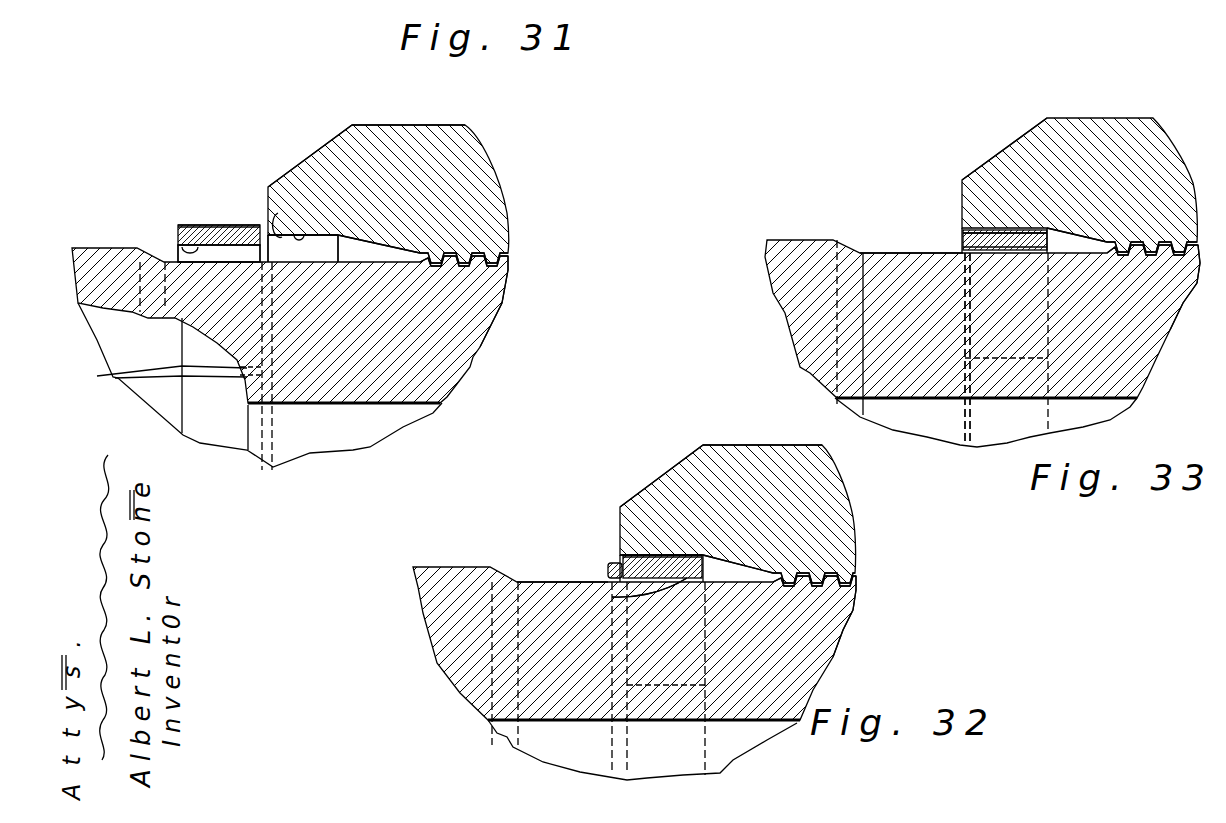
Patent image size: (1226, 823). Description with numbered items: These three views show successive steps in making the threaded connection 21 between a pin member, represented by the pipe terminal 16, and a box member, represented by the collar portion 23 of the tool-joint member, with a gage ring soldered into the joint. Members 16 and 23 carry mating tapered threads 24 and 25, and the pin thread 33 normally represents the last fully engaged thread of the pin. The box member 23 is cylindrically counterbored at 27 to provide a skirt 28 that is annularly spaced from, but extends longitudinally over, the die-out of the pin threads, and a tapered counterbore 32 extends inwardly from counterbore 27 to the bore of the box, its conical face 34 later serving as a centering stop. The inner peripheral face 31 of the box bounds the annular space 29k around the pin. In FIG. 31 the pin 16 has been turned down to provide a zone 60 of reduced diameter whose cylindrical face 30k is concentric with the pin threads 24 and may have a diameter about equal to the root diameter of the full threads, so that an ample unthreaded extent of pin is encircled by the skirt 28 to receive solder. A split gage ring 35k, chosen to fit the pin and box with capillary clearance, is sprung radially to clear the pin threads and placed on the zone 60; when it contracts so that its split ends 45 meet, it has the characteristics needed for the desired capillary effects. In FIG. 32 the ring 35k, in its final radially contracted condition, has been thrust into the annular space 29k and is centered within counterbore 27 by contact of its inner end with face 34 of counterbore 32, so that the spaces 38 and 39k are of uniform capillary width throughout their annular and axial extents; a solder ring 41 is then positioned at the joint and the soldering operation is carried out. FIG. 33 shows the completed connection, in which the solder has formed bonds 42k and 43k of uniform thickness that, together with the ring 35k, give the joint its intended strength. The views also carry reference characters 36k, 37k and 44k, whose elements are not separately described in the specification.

In FIG. 31, the pipe terminal 16 is at (367, 387).
In FIG. 32, the pipe terminal 16 is at (730, 710).
In FIG. 33, the pipe terminal 16 is at (1078, 382).
In FIG. 31, the collar portion 23 is at (398, 137).
In FIG. 32, the collar portion 23 is at (713, 470).
In FIG. 33, the collar portion 23 is at (1150, 127).
In FIG. 31, the skirt 28 is at (318, 167).
In FIG. 32, the skirt 28 is at (670, 483).
In FIG. 33, the skirt 28 is at (1035, 140).
In FIG. 31, the cylindrical counterbore 27 is at (339, 222).
In FIG. 32, the cylindrical counterbore 27 is at (735, 573).
In FIG. 31, the face of conical counterbore 34 is at (403, 253).
In FIG. 32, the face of conical counterbore 34 is at (760, 572).
In FIG. 31, the tapered counterbore 32 is at (382, 253).
In FIG. 32, the tapered counterbore 32 is at (715, 567).
In FIG. 33, the tapered counterbore 32 is at (1063, 243).
In FIG. 31, the connection 21 is at (459, 235).
In FIG. 32, the connection 21 is at (810, 557).
In FIG. 33, the connection 21 is at (1155, 230).
In FIG. 31, the box threads 25 is at (507, 260).
In FIG. 32, the box threads 25 is at (853, 593).
In FIG. 33, the box threads 25 is at (1173, 247).
In FIG. 31, the pin threads 24 is at (463, 257).
In FIG. 32, the pin threads 24 is at (845, 582).
In FIG. 33, the pin threads 24 is at (1160, 250).
In FIG. 31, the pin thread 33 is at (460, 258).
In FIG. 32, the pin thread 33 is at (833, 590).
In FIG. 33, the pin thread 33 is at (1160, 247).
In FIG. 31, the zone of reduced diameter 60 is at (318, 263).
In FIG. 31, the split ends 45 is at (115, 377).
In FIG. 31, the cylindrical face 30k is at (226, 262).
In FIG. 32, the cylindrical face 30k is at (690, 582).
In FIG. 31, the ring 35k is at (178, 228).
In FIG. 32, the ring 35k is at (667, 557).
In FIG. 33, the ring 35k is at (963, 237).
In FIG. 31, the facing layer 36k is at (196, 226).
In FIG. 31, the lip 37k is at (178, 253).
In FIG. 31, the annular space 29k is at (270, 215).
In FIG. 31, the peripheral face of box member 31 is at (303, 237).
In FIG. 32, the peripheral face of box member 31 is at (610, 597).
In FIG. 32, the space 38 is at (640, 557).
In FIG. 32, the solder ring 41 is at (613, 563).
In FIG. 32, the space 39k is at (607, 580).
In FIG. 33, the solder bond 42k is at (1005, 227).
In FIG. 33, the solder bond 43k is at (1008, 257).
In FIG. 33, the flange 44k is at (960, 250).